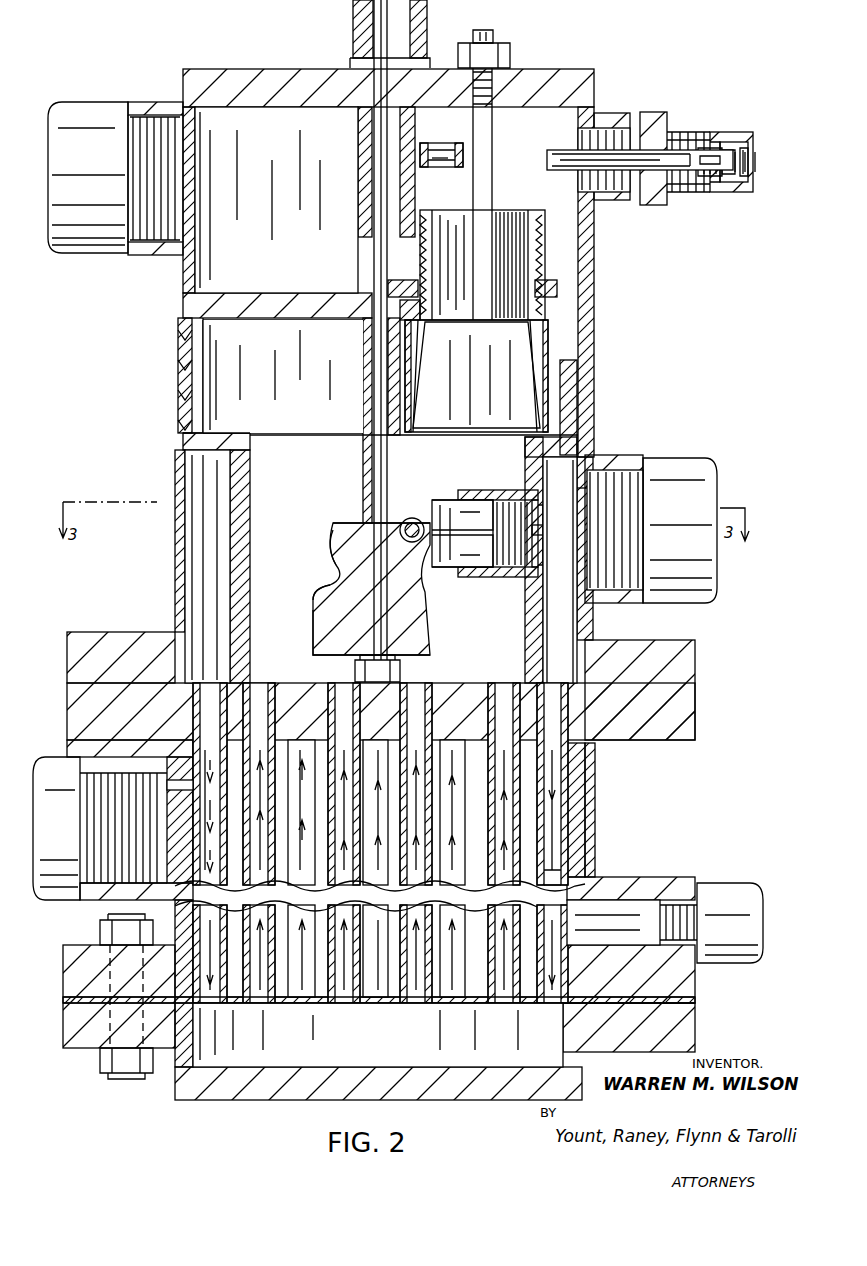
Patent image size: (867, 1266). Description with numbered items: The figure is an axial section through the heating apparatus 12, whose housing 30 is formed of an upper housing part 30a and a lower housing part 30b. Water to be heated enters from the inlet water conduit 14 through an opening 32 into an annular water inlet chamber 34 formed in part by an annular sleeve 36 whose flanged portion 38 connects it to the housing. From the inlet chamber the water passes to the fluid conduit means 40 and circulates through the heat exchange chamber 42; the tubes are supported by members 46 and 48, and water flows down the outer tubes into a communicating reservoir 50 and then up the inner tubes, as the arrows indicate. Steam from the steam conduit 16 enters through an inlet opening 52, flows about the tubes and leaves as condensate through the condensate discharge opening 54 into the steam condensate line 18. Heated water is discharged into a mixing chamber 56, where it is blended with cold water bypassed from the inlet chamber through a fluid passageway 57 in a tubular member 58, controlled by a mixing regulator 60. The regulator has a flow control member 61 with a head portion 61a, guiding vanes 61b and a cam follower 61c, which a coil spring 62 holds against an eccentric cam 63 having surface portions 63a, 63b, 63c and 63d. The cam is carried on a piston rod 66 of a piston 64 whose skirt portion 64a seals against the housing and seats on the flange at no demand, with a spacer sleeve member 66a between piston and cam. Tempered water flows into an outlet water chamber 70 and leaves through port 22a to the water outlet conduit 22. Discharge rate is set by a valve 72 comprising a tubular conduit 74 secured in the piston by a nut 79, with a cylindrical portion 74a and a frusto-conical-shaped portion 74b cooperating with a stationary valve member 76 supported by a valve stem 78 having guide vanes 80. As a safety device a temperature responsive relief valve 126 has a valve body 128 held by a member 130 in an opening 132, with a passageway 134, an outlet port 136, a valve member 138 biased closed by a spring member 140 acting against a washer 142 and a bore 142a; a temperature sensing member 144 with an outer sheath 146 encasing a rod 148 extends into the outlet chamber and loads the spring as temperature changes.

The heating apparatus 12 is at (597, 50).
The inlet water conduit 14 is at (667, 457).
The steam conduit 16 is at (50, 762).
The steam condensate line 18 is at (738, 886).
The water outlet conduit 22 is at (100, 114).
The port 22a is at (183, 258).
The housing 30 is at (604, 361).
The upper housing part 30a is at (588, 410).
The lower housing part 30b is at (586, 805).
The opening 32 is at (580, 490).
The annular water inlet chamber 34 is at (571, 644).
The annular sleeve 36 is at (231, 463).
The flanged portion 38 is at (208, 442).
The fluid conduit means 40 is at (579, 860).
The heat exchange chamber 42 is at (540, 782).
The supporting member 46 is at (530, 696).
The supporting member 48 is at (522, 1005).
The communicating reservoir 50 is at (390, 1038).
The inlet opening 52 is at (178, 780).
The condensate discharge opening 54 is at (590, 906).
The mixing chamber 56 is at (300, 470).
The fluid passageway 57 is at (545, 538).
The tubular member 58 is at (544, 512).
The mixing regulator 60 is at (429, 495).
The flow control member 61 is at (436, 568).
The head portion 61a is at (445, 500).
The vanes 61b is at (446, 570).
The cam follower 61c is at (413, 519).
The coil spring 62 is at (506, 497).
The eccentric cam 63 is at (421, 633).
The cam surface portion 63a is at (331, 527).
The cam surface portion 63b is at (334, 560).
The cam surface portion 63c is at (324, 590).
The cam surface portion 63d is at (313, 632).
The piston 64 is at (296, 296).
The skirt portion 64a is at (192, 363).
The piston rod 66 is at (373, 272).
The spacer sleeve member 66a is at (363, 406).
The outlet water chamber 70 is at (325, 123).
The valve 72 is at (559, 246).
The tubular conduit 74 is at (563, 353).
The cylindrical portion 74a is at (530, 222).
The frusto-conical-shaped portion 74b is at (536, 400).
The stationary valve member 76 is at (463, 340).
The valve stem 78 is at (494, 156).
The nut 79 is at (541, 280).
The guide vanes 80 is at (438, 212).
The temperature responsive relief valve 126 is at (706, 150).
The valve body 128 is at (680, 130).
The securing member 130 is at (642, 116).
The opening 132 is at (600, 114).
The passageway 134 is at (750, 171).
The outlet port 136 is at (708, 185).
The valve member 138 is at (750, 160).
The spring member 140 is at (730, 188).
The washer 142 is at (754, 136).
The cap bore 142a is at (727, 138).
The temperature sensing member 144 is at (549, 145).
The outer sheath 146 is at (432, 150).
The rod 148 is at (433, 167).